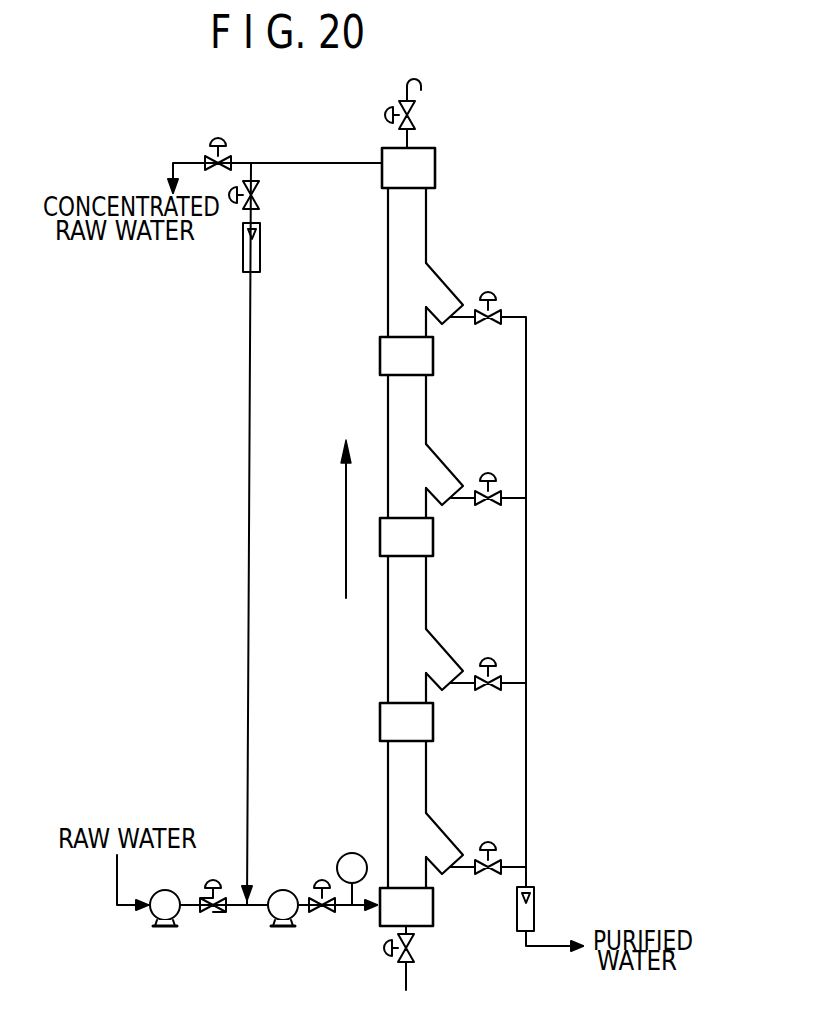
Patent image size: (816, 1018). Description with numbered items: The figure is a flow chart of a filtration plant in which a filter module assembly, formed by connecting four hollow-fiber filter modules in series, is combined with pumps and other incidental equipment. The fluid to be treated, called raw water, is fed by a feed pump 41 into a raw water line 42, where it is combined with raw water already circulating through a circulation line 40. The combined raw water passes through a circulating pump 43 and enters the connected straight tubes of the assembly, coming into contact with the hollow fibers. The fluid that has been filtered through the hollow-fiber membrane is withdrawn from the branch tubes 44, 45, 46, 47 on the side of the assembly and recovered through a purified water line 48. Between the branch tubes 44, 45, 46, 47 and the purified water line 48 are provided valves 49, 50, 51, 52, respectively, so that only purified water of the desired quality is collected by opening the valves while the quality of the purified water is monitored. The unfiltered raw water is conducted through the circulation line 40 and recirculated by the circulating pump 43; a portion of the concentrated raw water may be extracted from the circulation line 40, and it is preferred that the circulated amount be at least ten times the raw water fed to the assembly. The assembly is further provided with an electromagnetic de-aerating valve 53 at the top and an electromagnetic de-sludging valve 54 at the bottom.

The circulation line 40 is at (249, 610).
The feed pump 41 is at (165, 928).
The raw water line 42 is at (260, 903).
The circulating pump 43 is at (283, 928).
The branch tube 44 is at (442, 842).
The branch tube 45 is at (449, 658).
The branch tube 46 is at (452, 475).
The branch tube 47 is at (443, 290).
The purified water line 48 is at (527, 652).
The valve 49 is at (487, 840).
The valve 50 is at (490, 657).
The valve 51 is at (493, 473).
The valve 52 is at (498, 293).
The electromagnetic de-aerating valve 53 is at (415, 122).
The electromagnetic de-sludging valve 54 is at (415, 950).